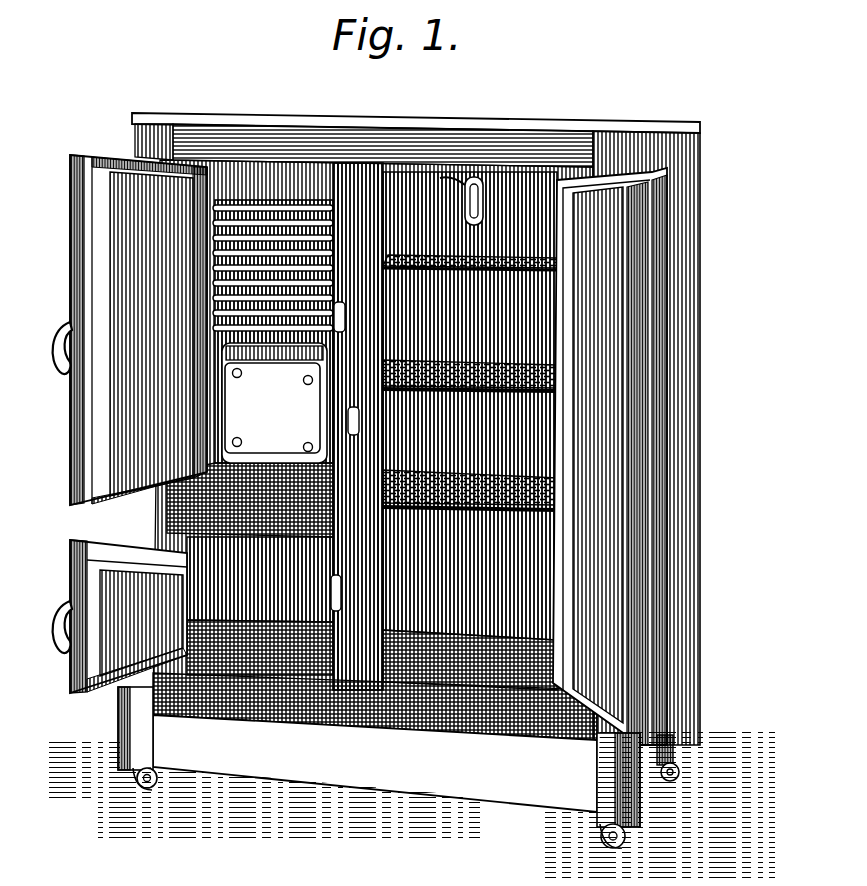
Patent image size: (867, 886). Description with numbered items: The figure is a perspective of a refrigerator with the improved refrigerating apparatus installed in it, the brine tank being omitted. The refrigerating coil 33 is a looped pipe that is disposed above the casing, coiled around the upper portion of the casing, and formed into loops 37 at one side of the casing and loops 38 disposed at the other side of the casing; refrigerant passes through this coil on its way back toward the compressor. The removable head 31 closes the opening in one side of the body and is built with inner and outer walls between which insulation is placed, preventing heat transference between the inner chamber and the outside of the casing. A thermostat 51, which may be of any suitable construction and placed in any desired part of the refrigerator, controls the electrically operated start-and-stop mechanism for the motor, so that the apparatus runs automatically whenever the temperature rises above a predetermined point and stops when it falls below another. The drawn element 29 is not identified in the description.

The coil compartment 29 is at (273, 320).
The refrigerating coil 33 is at (231, 297).
The removable head 31 is at (272, 408).
The loops 37 is at (229, 402).
The loops 38 is at (331, 407).
The thermostat 51 is at (489, 204).